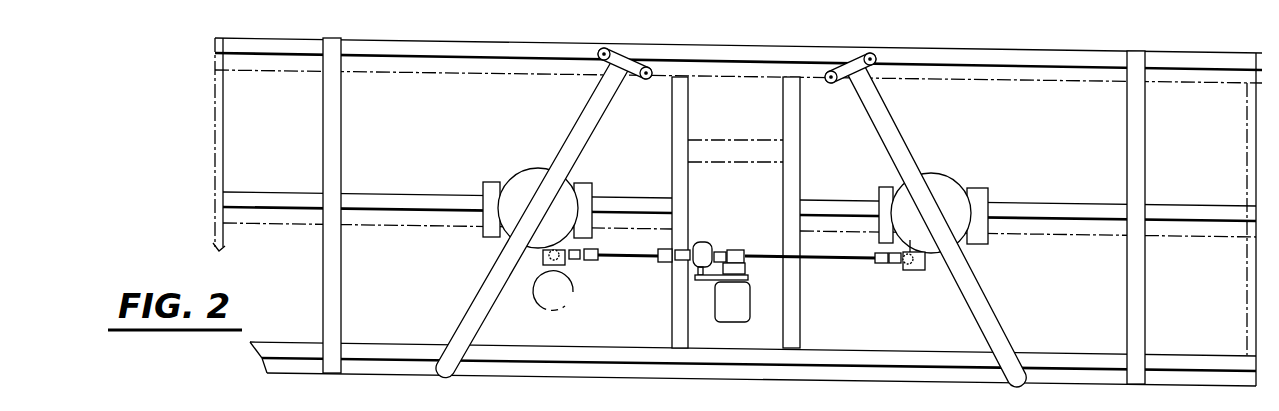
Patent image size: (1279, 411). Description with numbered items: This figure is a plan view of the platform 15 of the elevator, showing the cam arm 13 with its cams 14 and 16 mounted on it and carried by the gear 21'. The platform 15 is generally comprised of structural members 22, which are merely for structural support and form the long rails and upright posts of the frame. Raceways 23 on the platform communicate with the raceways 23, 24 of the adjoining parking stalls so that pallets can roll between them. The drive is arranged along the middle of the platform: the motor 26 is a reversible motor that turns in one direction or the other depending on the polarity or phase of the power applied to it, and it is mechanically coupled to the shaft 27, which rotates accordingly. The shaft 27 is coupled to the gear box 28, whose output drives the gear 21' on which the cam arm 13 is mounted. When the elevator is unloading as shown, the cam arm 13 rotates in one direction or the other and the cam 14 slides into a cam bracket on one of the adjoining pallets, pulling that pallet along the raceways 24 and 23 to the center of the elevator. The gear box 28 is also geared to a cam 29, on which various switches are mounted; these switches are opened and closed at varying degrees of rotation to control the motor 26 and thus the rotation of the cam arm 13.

The cam arm 13 is at (479, 292).
The cam 14 is at (444, 375).
The platform 15 is at (1064, 129).
The cam 16 is at (646, 66).
The gear 21' is at (737, 206).
The structural members 22 is at (226, 153).
The raceways 23 is at (343, 153).
The raceways 24 is at (336, 374).
The motor 26 is at (726, 312).
The shaft 27 is at (622, 258).
The gear box 28 is at (904, 270).
The cam 29 is at (568, 300).